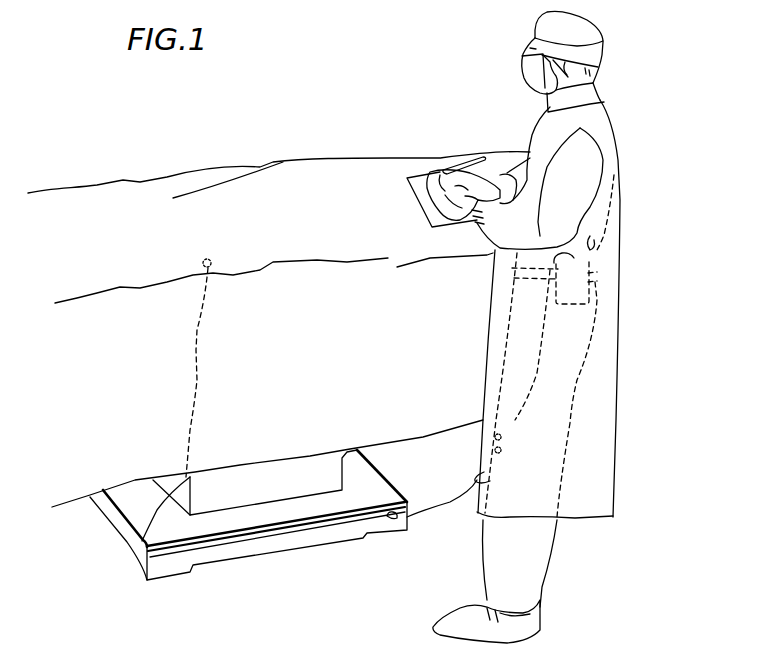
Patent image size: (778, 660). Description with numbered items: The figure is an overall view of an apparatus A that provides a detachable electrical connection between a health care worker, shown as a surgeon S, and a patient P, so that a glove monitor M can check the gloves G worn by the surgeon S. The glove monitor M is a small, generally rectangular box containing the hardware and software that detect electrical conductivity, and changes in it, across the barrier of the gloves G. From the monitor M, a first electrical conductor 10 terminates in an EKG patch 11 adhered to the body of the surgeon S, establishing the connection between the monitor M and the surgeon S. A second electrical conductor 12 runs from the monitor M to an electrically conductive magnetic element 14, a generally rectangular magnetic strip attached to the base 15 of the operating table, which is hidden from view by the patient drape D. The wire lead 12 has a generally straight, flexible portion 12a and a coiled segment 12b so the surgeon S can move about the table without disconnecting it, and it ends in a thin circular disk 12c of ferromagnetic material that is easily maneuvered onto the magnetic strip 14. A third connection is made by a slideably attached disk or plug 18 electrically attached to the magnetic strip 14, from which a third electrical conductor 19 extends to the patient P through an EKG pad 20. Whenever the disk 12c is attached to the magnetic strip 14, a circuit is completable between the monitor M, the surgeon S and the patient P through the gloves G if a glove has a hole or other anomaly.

The surgeon S is at (598, 121).
The gloves G is at (437, 160).
The patient P is at (413, 194).
The patient drape D is at (287, 223).
The apparatus A is at (617, 291).
The glove monitor M is at (572, 303).
The first electrical conductor 10 is at (597, 251).
The EKG patch 11 is at (612, 210).
The second electrical conductor 12 is at (537, 376).
The straight flexible portion 12a is at (518, 402).
The coiled segment 12b is at (490, 467).
The disk 12c is at (388, 518).
The magnetic electrical connector 14 is at (182, 560).
The base 15 is at (107, 513).
The slideably attached disk 18 is at (143, 567).
The third electrical conductor 19 is at (193, 372).
The EKG pad 20 is at (209, 257).